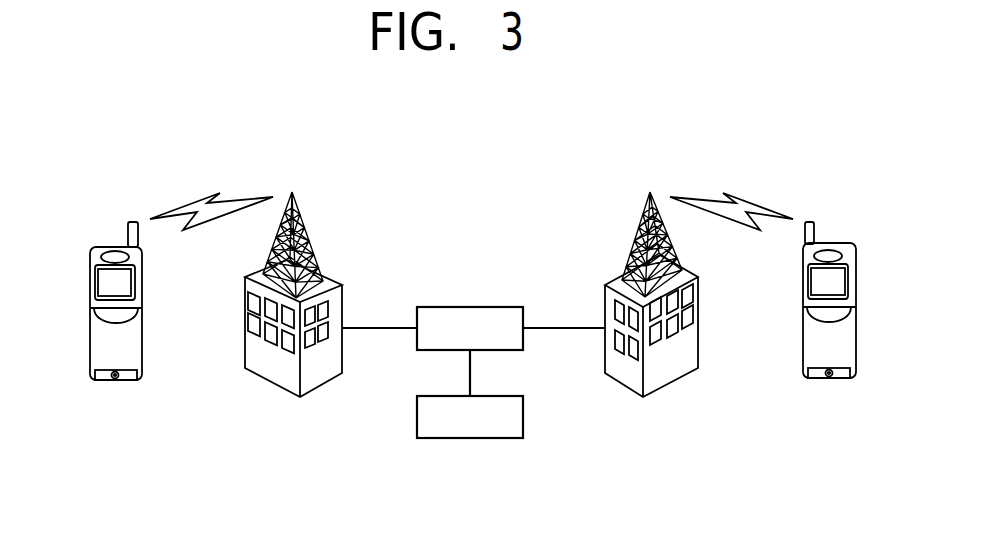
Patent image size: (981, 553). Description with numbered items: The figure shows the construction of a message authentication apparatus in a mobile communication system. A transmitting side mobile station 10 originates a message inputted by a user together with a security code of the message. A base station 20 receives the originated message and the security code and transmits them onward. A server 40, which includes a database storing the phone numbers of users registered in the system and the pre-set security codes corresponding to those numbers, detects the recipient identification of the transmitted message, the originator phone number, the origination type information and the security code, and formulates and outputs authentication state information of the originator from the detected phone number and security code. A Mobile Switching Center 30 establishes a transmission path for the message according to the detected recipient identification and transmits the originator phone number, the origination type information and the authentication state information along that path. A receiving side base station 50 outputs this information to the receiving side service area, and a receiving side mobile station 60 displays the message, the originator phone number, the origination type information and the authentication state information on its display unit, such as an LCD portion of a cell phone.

The transmitting side mobile station 10 is at (90, 326).
The base station 20 is at (332, 277).
The Mobile Switching Center 30 is at (470, 307).
The server 40 is at (470, 438).
The receiving side base station 50 is at (617, 282).
The receiving side mobile station 60 is at (856, 326).